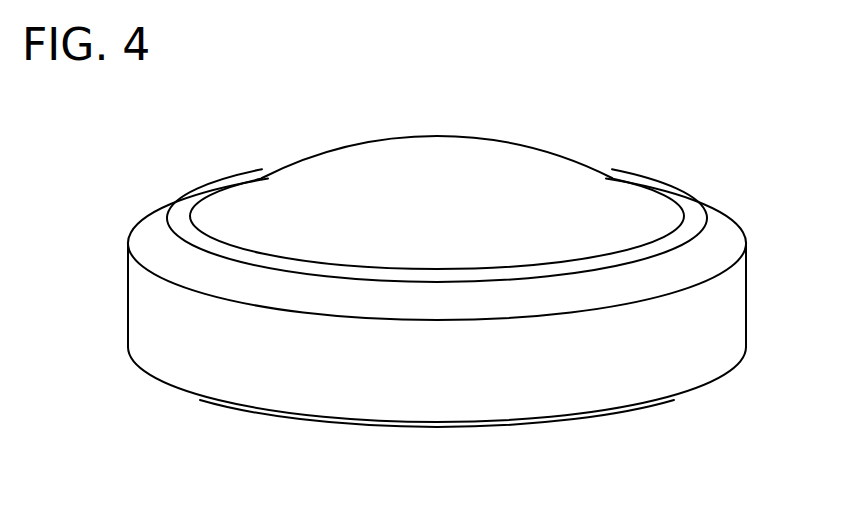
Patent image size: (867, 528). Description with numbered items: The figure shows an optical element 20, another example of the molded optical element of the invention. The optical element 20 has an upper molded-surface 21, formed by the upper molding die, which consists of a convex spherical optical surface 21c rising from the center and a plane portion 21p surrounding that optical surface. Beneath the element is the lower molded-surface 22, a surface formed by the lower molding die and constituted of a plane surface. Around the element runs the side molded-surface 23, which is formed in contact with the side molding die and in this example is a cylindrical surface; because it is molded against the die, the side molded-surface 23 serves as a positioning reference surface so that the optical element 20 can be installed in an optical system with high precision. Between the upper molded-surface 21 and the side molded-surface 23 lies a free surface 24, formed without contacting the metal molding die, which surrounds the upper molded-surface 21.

The optical element 20 is at (222, 151).
The upper molded-surface 21 is at (710, 90).
The convex spherical optical surface 21c is at (547, 170).
The plane portion 21p is at (668, 197).
The lower molded-surface 22 is at (437, 423).
The side molded-surface 23 is at (150, 292).
The free surface 24 is at (152, 232).